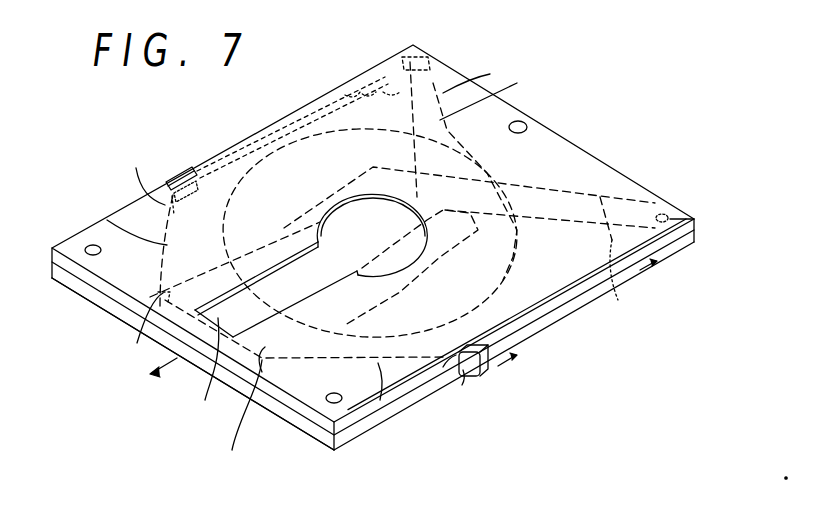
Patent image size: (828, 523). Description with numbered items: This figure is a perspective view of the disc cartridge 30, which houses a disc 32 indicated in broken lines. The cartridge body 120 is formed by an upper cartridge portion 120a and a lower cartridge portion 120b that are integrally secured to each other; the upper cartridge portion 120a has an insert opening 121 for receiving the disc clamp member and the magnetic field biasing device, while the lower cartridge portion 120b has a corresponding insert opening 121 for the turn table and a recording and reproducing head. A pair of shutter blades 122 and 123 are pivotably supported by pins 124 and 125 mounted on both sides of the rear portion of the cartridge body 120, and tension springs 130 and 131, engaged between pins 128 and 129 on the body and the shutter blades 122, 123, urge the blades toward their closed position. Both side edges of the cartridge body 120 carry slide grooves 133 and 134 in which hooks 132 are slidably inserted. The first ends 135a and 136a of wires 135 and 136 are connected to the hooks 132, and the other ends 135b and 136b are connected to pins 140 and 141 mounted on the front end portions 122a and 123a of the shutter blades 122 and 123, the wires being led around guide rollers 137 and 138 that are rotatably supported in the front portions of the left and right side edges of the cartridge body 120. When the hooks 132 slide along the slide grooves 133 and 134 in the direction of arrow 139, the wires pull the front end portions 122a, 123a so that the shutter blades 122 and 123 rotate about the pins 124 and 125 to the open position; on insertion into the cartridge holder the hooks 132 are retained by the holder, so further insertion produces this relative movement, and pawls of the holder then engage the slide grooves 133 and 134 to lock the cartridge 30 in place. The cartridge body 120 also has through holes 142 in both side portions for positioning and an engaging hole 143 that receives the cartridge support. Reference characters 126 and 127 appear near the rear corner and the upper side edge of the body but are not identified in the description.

The disc cartridge 30 is at (508, 50).
The magnetic disk 32 is at (518, 268).
The cartridge body 120 is at (580, 148).
The upper cartridge portion 120a is at (274, 400).
The lower cartridge portion 120b is at (311, 440).
The insert opening 121 is at (298, 270).
The shutter blade 122 is at (337, 215).
The front end portion 122a is at (605, 190).
The shutter blade 123 is at (204, 370).
The front end portion 123a is at (517, 83).
The pin 124 is at (672, 217).
The pin 125 is at (425, 58).
The spring portion 126 is at (616, 302).
The hook portion 127 is at (357, 92).
The pin 128 is at (660, 212).
The pin 129 is at (485, 76).
The tension spring 130 is at (650, 270).
The tension spring 131 is at (390, 90).
The hook 132 is at (178, 176).
The slide groove 133 is at (536, 322).
The slide groove 134 is at (303, 110).
The wire 135 is at (380, 400).
The one end of wire 135a is at (463, 386).
The other end of wire 135b is at (264, 371).
The wire 136 is at (107, 219).
The spring end 136a is at (178, 192).
The end of wire 136b is at (150, 300).
The guide roller 137 is at (443, 368).
The guide roller 138 is at (144, 174).
The arrow 139 is at (505, 368).
The pin 140 is at (145, 336).
The pin 141 is at (239, 415).
The through hole 142 is at (88, 247).
The engaging hole 143 is at (525, 123).